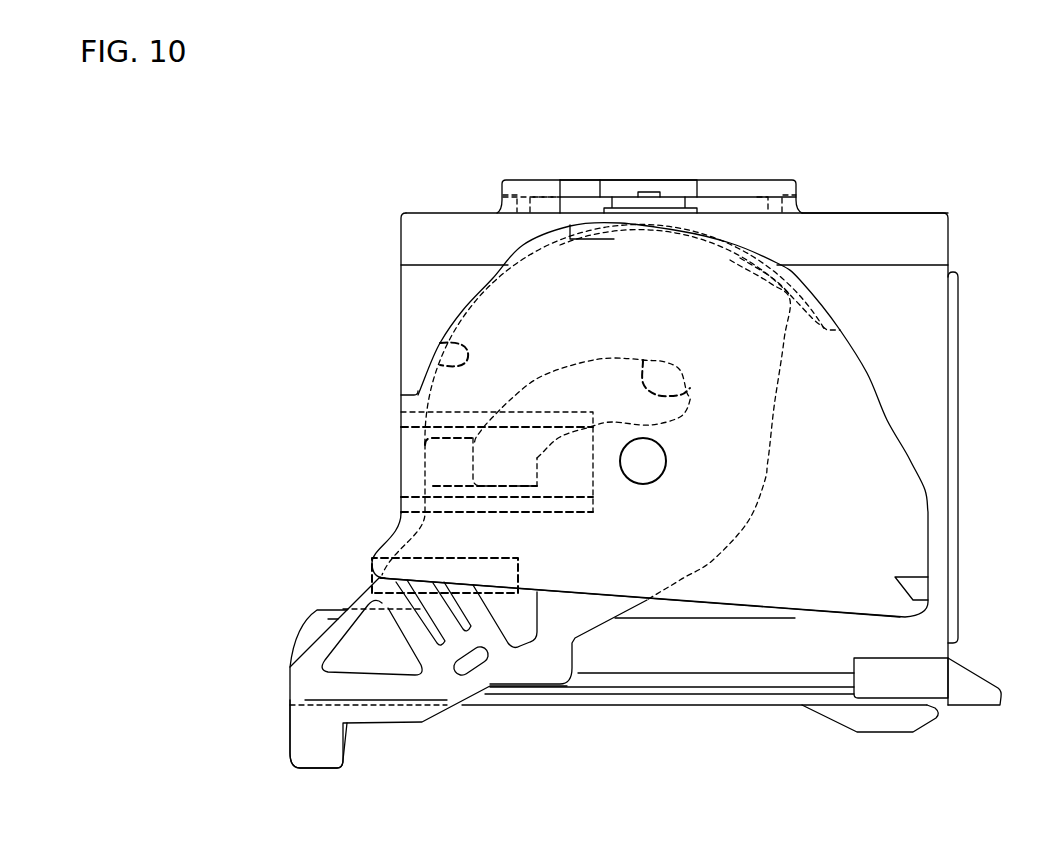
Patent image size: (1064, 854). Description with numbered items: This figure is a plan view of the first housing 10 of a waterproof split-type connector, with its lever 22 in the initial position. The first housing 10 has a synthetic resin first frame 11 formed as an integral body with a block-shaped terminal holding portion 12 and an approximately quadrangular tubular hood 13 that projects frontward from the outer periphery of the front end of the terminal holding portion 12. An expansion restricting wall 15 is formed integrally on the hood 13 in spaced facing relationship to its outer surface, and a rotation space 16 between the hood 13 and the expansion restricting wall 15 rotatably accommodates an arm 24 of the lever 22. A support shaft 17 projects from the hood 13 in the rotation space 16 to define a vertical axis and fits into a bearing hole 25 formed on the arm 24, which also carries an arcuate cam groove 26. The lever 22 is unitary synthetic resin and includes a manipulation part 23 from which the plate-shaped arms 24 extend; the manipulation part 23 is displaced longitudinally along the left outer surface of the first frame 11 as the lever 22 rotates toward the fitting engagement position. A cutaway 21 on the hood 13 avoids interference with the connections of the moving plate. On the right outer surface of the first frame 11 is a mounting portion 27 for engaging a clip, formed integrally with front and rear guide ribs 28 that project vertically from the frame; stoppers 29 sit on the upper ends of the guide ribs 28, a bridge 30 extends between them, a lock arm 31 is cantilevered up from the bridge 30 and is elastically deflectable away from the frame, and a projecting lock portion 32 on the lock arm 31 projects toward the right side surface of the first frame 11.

The first housing 10 is at (378, 146).
The first frame 11 is at (1027, 220).
The terminal holding portion 12 is at (917, 238).
The hood 13 is at (432, 228).
The expansion restricting wall 15 is at (830, 383).
The rotation space 16 is at (440, 343).
The support shaft 17 is at (655, 457).
The cutaway 21 is at (578, 497).
The lever 22 is at (255, 640).
The manipulation part 23 is at (297, 748).
The arm 24 is at (767, 480).
The bearing hole 25 is at (652, 463).
The cam groove 26 is at (690, 390).
The mounting portion 27 is at (755, 143).
The guide rib 28 is at (775, 198).
The stopper 29 is at (545, 203).
The bridge 30 is at (580, 183).
The lock arm 31 is at (628, 183).
The lock portion 32 is at (667, 202).